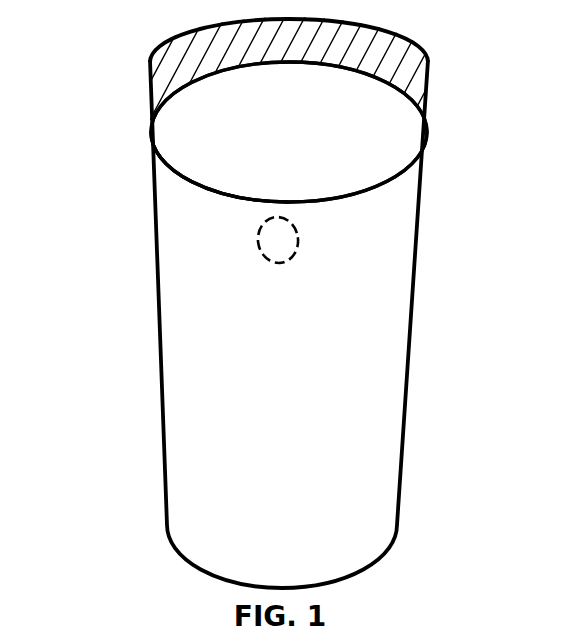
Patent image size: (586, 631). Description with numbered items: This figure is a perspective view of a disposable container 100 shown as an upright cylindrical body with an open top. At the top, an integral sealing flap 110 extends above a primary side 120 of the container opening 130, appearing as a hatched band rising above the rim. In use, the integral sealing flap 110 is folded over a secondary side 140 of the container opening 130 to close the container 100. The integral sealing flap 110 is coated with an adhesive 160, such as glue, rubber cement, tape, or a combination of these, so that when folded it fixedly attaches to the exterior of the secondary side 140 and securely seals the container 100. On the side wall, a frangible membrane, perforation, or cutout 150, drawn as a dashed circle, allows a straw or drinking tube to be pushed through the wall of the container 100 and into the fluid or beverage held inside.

The disposable container 100 is at (422, 220).
The integral sealing flap 110 is at (425, 50).
The primary side of the container opening 120 is at (248, 66).
The container opening 130 is at (355, 151).
The secondary side of the container opening 140 is at (217, 192).
The frangible membrane, perforation, or cutout 150 is at (288, 260).
The adhesive 160 is at (192, 55).